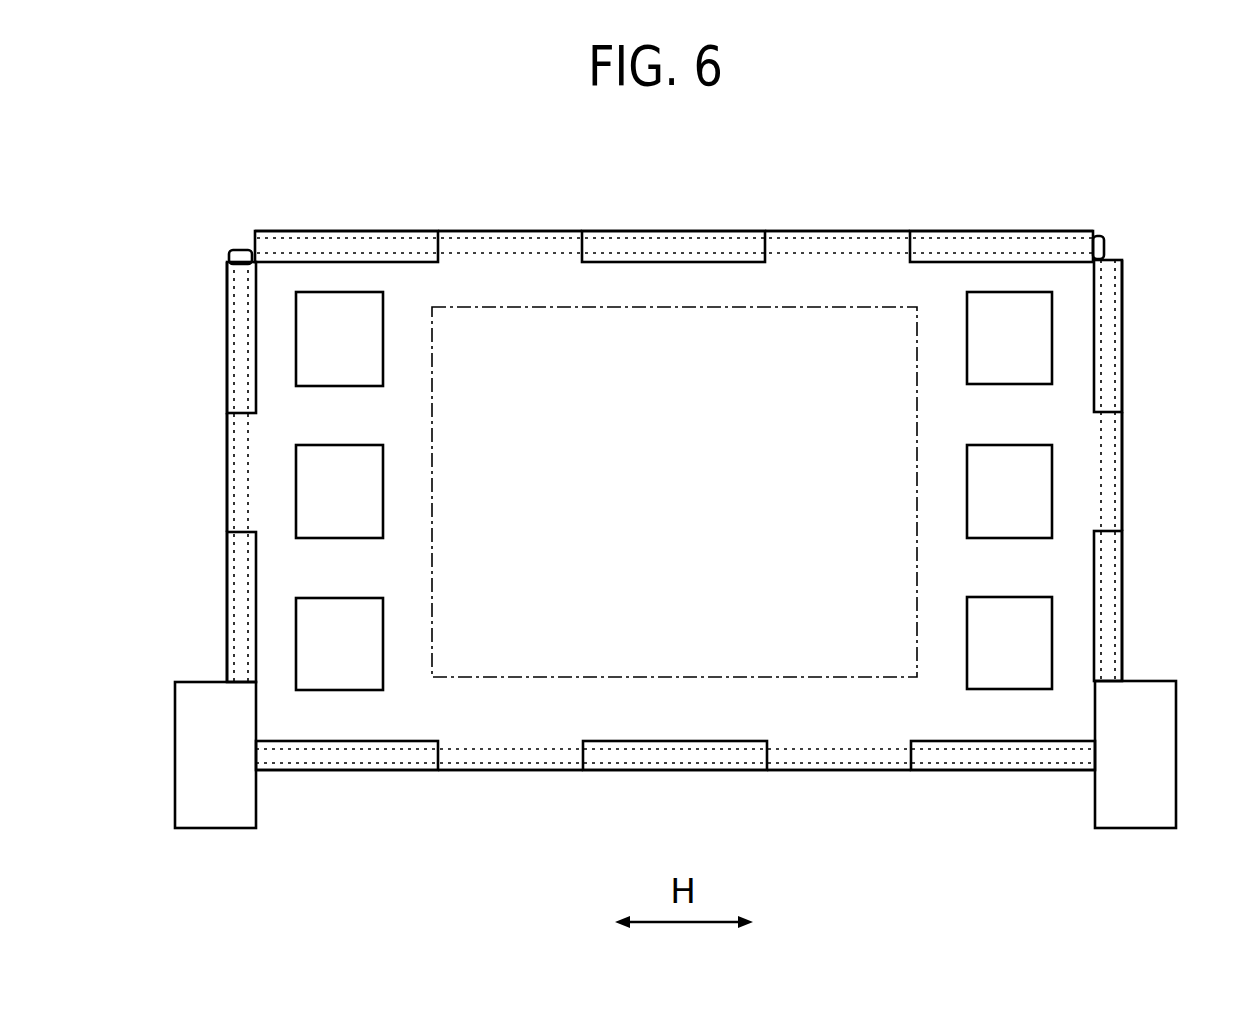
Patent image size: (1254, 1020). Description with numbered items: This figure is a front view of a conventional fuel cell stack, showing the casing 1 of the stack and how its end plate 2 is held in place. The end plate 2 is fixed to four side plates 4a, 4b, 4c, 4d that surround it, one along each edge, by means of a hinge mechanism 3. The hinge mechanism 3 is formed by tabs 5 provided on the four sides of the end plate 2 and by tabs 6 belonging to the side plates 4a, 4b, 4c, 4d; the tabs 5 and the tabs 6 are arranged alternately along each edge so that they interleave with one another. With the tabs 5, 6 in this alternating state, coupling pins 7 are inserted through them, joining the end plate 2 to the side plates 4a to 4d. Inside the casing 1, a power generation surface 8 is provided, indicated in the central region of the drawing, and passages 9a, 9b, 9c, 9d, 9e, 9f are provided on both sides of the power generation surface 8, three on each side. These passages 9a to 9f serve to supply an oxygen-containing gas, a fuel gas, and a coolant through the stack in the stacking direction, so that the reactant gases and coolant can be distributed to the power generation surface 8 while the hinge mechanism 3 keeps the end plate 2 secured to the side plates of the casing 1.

The casing 1 is at (594, 170).
The end plate 2 is at (1020, 268).
The hinge mechanism 3 is at (1137, 241).
The side plate 4a is at (1127, 415).
The side plate 4b is at (890, 202).
The side plate 4c is at (224, 415).
The side plate 4d is at (890, 815).
The tab 5 is at (500, 247).
The tab 6 is at (365, 247).
The coupling pin 7 is at (739, 248).
The power generation surface 8 is at (565, 633).
The passage 9a is at (1009, 338).
The passage 9b is at (1009, 491).
The passage 9c is at (1009, 643).
The passage 9d is at (339, 339).
The passage 9e is at (339, 491).
The passage 9f is at (339, 644).